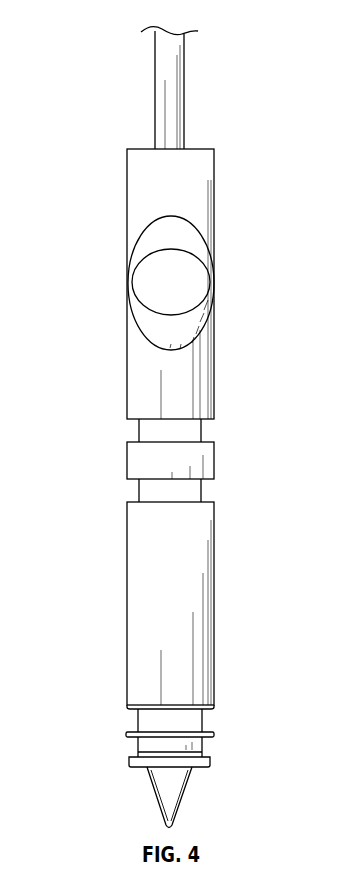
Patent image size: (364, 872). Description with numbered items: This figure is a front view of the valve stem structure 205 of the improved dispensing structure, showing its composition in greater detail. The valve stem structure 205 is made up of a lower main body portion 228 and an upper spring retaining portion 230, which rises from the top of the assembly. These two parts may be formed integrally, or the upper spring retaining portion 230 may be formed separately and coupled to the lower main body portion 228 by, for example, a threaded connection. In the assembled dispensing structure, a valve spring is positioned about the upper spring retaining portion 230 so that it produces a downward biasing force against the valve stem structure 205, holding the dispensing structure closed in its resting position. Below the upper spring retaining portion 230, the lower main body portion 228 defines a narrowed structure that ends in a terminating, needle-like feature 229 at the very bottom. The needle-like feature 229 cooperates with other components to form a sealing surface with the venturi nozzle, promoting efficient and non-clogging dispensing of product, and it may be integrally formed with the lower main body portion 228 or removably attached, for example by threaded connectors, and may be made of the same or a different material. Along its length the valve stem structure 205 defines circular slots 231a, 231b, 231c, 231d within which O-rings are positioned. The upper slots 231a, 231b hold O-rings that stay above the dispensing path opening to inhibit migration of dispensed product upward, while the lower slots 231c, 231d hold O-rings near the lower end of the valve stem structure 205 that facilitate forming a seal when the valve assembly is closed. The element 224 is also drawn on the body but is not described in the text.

The upper spring retaining portion 230 is at (148, 92).
The valve stem structure 205 is at (223, 283).
The window 224 is at (153, 282).
The circular slot 231a is at (130, 433).
The circular slot 231b is at (130, 489).
The lower main body portion 228 is at (223, 610).
The circular slot 231c is at (130, 719).
The circular slot 231d is at (130, 746).
The needle-like feature 229 is at (190, 797).